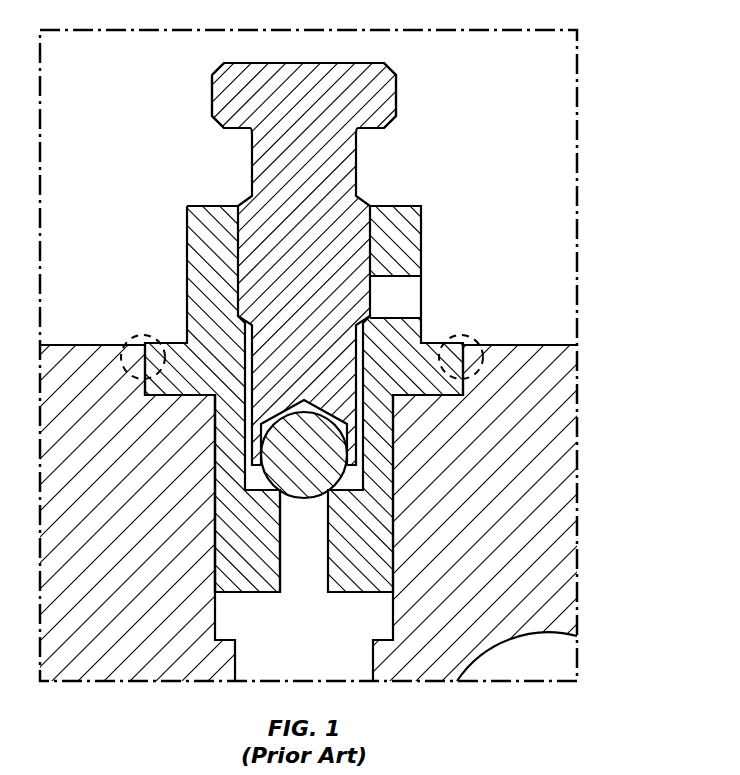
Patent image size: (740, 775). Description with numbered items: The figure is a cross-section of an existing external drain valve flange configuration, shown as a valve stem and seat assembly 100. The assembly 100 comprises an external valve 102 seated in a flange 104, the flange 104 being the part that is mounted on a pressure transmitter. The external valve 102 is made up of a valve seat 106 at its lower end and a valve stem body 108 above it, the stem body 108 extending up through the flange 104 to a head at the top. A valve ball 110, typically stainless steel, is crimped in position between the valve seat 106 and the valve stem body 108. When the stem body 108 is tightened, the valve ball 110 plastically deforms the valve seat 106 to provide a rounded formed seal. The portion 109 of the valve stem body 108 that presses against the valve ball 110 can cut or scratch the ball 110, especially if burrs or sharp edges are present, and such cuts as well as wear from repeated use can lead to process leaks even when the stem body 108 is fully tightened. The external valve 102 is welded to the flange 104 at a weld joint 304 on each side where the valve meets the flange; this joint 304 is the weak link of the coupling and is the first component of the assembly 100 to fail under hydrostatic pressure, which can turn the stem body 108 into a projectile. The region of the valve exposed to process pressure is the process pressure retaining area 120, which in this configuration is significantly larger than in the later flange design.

The valve stem and seat assembly 100 is at (613, 150).
The external valve 102 is at (421, 59).
The flange 104 is at (600, 385).
The valve seat 106 is at (363, 552).
The valve stem body 108 is at (292, 132).
The portion of the valve stem body 109 is at (288, 411).
The valve ball 110 is at (330, 473).
The process pressure retaining area 120 is at (213, 553).
The weld joint 304 is at (132, 340).